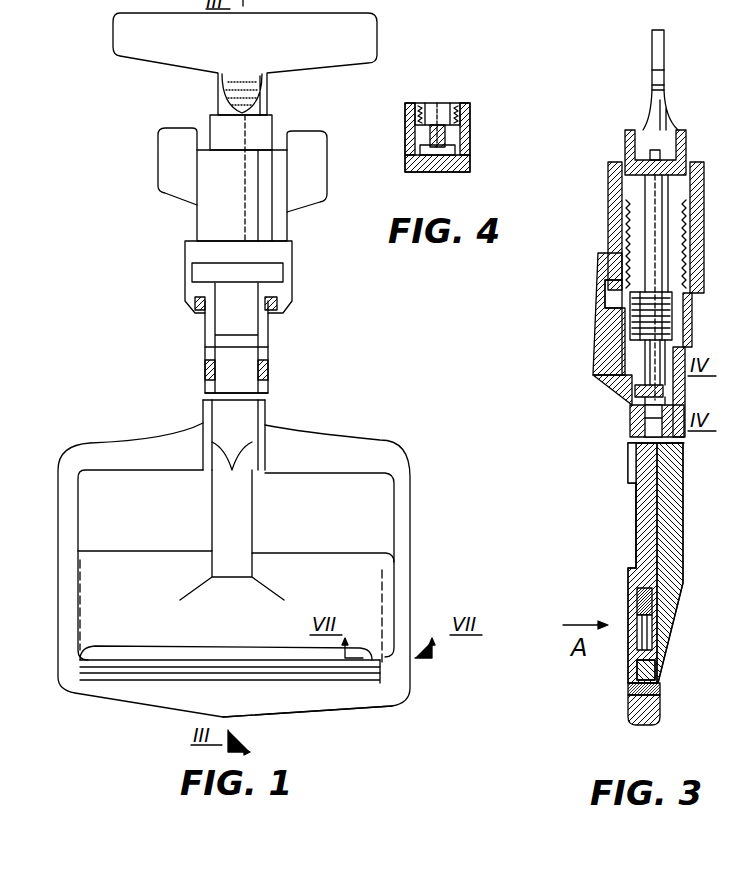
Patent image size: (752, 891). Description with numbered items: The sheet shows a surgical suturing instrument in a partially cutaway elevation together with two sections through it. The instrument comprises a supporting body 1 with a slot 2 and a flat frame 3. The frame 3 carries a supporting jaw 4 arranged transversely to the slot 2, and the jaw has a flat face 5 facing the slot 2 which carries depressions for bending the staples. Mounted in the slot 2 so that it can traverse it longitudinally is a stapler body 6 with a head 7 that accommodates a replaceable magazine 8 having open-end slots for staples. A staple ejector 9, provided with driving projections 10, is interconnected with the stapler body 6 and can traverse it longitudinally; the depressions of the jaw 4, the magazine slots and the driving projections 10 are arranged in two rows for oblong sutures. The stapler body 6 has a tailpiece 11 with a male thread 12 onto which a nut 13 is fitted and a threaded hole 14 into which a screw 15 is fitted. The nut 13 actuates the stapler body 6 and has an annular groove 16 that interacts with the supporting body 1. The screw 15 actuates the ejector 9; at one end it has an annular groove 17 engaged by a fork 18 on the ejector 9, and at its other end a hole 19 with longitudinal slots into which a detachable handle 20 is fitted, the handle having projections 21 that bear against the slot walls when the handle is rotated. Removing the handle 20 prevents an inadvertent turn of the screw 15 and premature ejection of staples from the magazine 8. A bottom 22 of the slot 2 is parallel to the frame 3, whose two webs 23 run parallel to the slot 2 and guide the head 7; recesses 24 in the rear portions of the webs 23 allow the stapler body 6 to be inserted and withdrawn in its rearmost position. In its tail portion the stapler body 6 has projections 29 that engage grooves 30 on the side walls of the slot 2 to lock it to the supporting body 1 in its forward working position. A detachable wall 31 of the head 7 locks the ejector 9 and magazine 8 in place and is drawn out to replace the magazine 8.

In FIG. 1, the supporting body 1 is at (268, 408).
In FIG. 4, the supporting body 1 is at (472, 113).
In FIG. 3, the supporting body 1 is at (592, 378).
In FIG. 1, the slot 2 is at (232, 521).
In FIG. 1, the flat frame 3 is at (410, 541).
In FIG. 1, the supporting jaw 4 is at (296, 706).
In FIG. 3, the supporting jaw 4 is at (628, 713).
In FIG. 1, the flat face 5 is at (255, 673).
In FIG. 3, the flat face 5 is at (660, 691).
In FIG. 1, the stapler body 6 is at (230, 414).
In FIG. 3, the stapler body 6 is at (683, 521).
In FIG. 1, the head 7 is at (372, 589).
In FIG. 1, the replaceable magazine 8 is at (380, 674).
In FIG. 3, the replaceable magazine 8 is at (660, 681).
In FIG. 4, the staple ejector 9 is at (463, 167).
In FIG. 3, the staple ejector 9 is at (630, 535).
In FIG. 3, the driving projections 10 is at (655, 641).
In FIG. 3, the tailpiece 11 is at (600, 346).
In FIG. 3, the male thread 12 is at (606, 299).
In FIG. 1, the nut 13 is at (203, 218).
In FIG. 3, the nut 13 is at (608, 231).
In FIG. 3, the threaded hole 14 is at (616, 390).
In FIG. 1, the screw 15 is at (216, 132).
In FIG. 3, the screw 15 is at (630, 321).
In FIG. 1, the annular groove 16 is at (215, 253).
In FIG. 3, the annular groove 16 is at (598, 268).
In FIG. 4, the annular groove 17 is at (430, 138).
In FIG. 3, the annular groove 17 is at (665, 394).
In FIG. 4, the fork 18 is at (455, 141).
In FIG. 3, the hole 19 is at (625, 152).
In FIG. 1, the detachable handle 20 is at (166, 58).
In FIG. 3, the detachable handle 20 is at (656, 120).
In FIG. 3, the projections 21 is at (654, 150).
In FIG. 3, the bottom 22 is at (640, 491).
In FIG. 1, the webs 23 is at (63, 604).
In FIG. 1, the recesses 24 is at (80, 529).
In FIG. 1, the projections 29 is at (206, 361).
In FIG. 1, the grooves 30 is at (206, 318).
In FIG. 3, the wall 31 is at (634, 598).